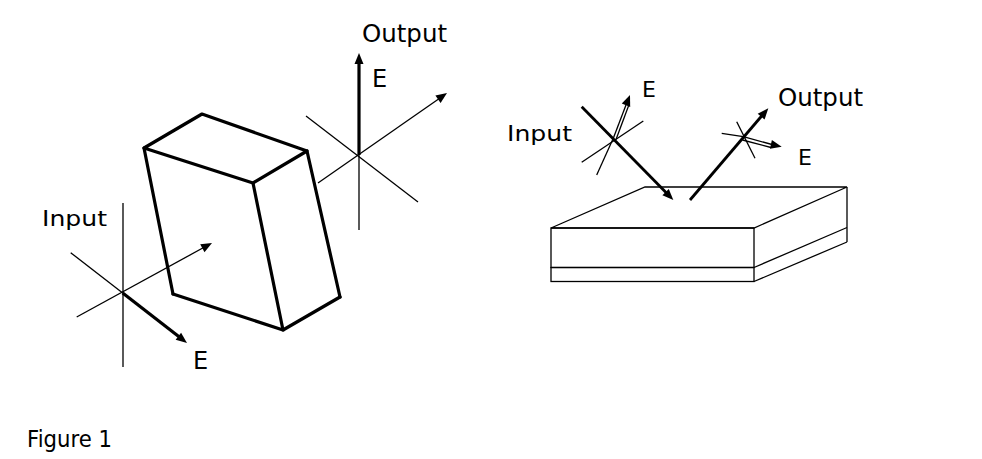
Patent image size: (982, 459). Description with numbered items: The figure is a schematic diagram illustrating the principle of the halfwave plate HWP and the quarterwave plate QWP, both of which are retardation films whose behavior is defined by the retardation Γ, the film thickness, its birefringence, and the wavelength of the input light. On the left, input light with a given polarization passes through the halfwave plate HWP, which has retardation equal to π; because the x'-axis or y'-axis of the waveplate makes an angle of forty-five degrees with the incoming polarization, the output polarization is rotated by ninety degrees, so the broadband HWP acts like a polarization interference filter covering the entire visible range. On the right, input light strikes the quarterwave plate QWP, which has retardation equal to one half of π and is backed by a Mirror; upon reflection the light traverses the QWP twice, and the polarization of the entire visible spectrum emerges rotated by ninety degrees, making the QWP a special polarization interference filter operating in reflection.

The halfwave plate HWP is at (242, 222).
The quarterwave plate QWP is at (699, 227).
The mirror Mirror is at (699, 274).